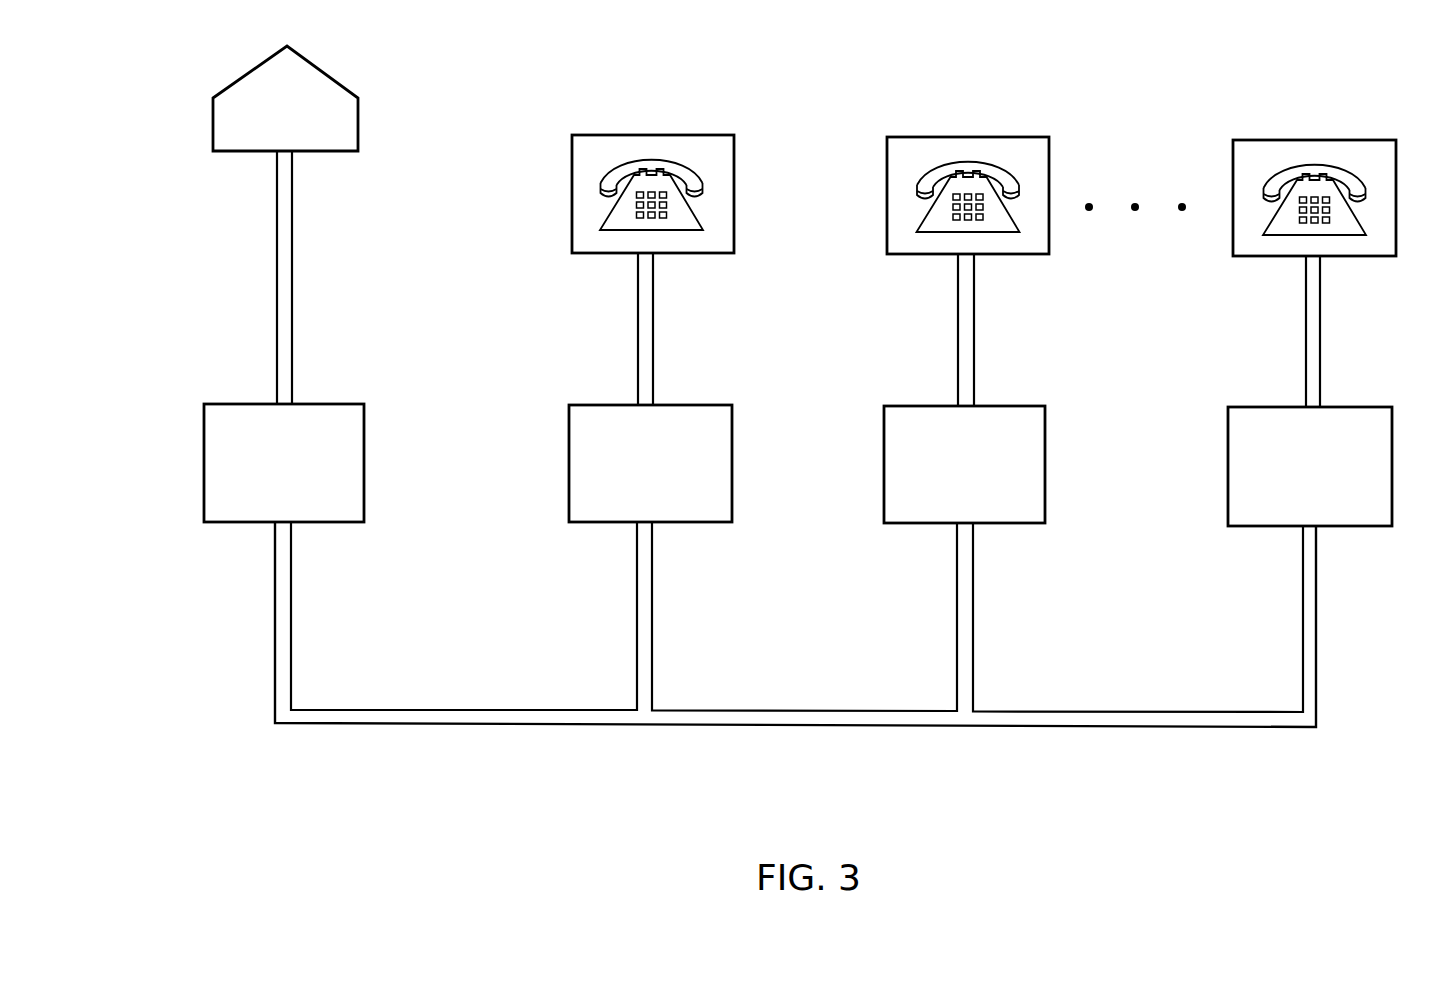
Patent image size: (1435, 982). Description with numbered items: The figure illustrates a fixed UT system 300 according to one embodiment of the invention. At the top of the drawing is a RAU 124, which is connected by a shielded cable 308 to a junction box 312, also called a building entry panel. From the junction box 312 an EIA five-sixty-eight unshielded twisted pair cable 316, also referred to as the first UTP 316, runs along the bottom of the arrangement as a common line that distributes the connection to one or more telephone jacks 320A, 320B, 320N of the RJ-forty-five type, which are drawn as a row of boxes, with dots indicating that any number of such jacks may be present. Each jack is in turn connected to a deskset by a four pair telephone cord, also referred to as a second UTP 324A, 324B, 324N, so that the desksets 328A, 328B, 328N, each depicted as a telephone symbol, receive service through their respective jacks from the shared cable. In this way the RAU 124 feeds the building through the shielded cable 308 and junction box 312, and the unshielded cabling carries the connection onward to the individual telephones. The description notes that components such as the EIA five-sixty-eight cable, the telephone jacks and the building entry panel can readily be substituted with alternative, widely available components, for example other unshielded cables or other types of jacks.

The fixed UT system 300 is at (205, 787).
The RAU 124 is at (334, 77).
The shielded cable 308 is at (293, 282).
The junction box 312 is at (333, 404).
The unshielded twisted pair cable 316 is at (434, 710).
The RJ-45 telephone jack 320A is at (682, 405).
The RJ-45 telephone jack 320B is at (995, 406).
The RJ-45 telephone jack 320N is at (1337, 407).
The four pair RJ-45 telephone cord 324A is at (654, 335).
The four pair RJ-45 telephone cord 324B is at (975, 335).
The four pair RJ-45 telephone cord 324N is at (1321, 337).
The deskset 328A is at (687, 135).
The deskset 328B is at (1000, 137).
The deskset 328N is at (1338, 140).